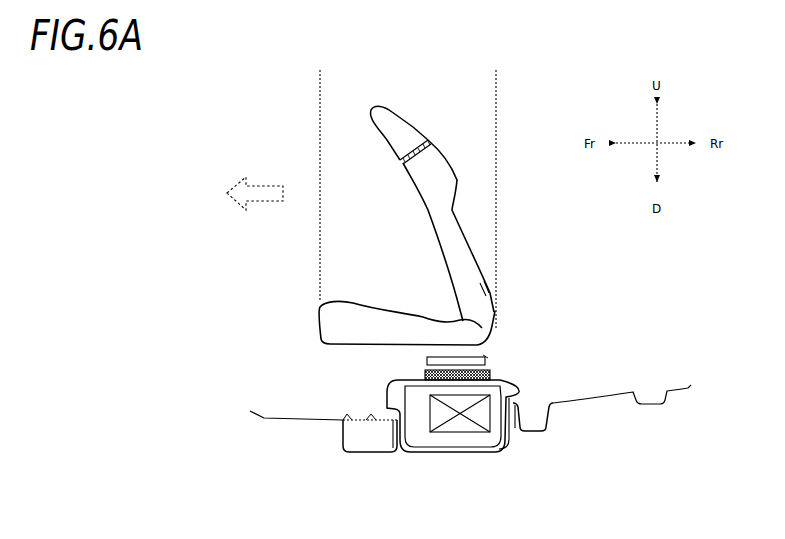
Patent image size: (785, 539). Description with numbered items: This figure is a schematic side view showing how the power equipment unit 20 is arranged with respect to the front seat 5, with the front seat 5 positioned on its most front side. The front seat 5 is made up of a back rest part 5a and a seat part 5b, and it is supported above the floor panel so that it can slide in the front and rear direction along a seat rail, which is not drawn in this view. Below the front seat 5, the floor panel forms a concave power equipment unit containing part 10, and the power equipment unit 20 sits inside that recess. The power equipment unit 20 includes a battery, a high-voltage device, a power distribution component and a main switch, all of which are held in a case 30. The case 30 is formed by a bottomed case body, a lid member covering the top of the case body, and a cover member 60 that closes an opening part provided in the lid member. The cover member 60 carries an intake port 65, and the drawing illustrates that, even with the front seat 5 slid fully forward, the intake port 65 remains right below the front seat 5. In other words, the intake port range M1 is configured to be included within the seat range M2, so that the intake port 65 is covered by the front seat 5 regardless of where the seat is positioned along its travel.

The front seat 5 is at (451, 213).
The back rest part 5a is at (440, 163).
The seat part 5b is at (358, 311).
The intake port 65 is at (446, 368).
The intake port range M1 is at (486, 354).
The seat range M2 is at (494, 84).
The cover member 60 is at (491, 370).
The power equipment unit containing part 10 is at (466, 458).
The power equipment unit 20 is at (371, 399).
The case 30 is at (520, 437).